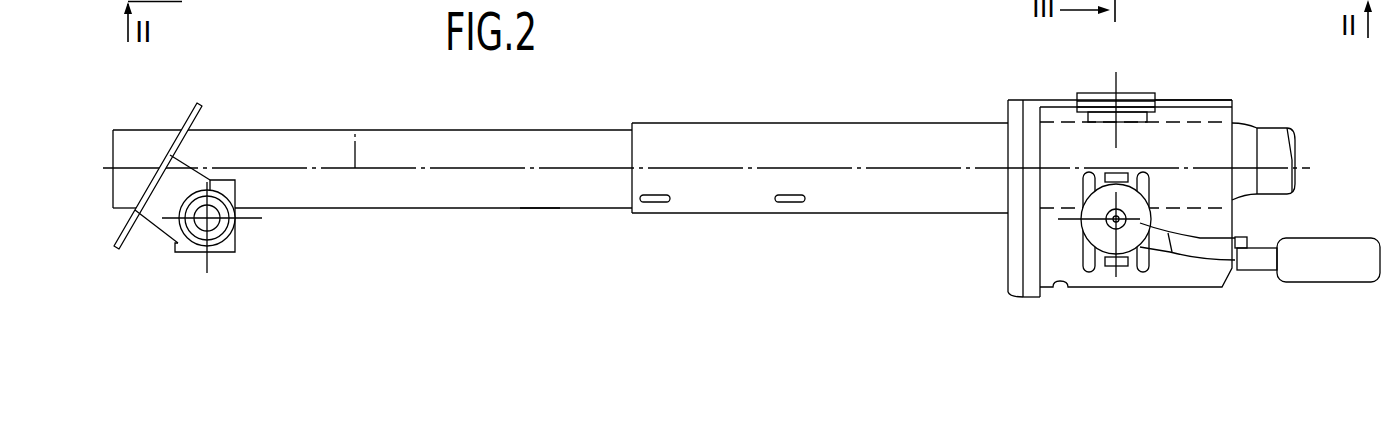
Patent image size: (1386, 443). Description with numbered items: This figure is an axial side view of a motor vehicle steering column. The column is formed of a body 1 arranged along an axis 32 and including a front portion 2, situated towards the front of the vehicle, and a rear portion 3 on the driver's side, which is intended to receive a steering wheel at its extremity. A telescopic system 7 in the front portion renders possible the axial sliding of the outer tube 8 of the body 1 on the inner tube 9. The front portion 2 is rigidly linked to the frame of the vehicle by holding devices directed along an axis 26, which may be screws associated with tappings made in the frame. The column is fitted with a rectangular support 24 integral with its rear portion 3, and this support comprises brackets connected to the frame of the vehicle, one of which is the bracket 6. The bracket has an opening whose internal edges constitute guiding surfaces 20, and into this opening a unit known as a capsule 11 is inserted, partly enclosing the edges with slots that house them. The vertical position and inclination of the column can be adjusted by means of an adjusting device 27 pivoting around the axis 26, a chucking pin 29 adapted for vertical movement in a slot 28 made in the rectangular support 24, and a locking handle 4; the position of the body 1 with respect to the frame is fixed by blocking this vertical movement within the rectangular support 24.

The body 1 is at (810, 132).
The front portion 2 is at (444, 118).
The rear portion 3 is at (1250, 116).
The locking handle 4 is at (1348, 248).
The bracket 6 is at (1058, 100).
The telescopic system 7 is at (632, 123).
The outer tube 8 is at (738, 213).
The inner tube 9 is at (558, 208).
The capsule 11 is at (1140, 95).
The guiding surfaces 20 is at (1193, 100).
The rectangular support 24 is at (1175, 275).
The axis 26 is at (212, 227).
The adjusting device 27 is at (158, 210).
The slot 28 is at (1123, 263).
The chucking pin 29 is at (1095, 265).
The axis 32 is at (355, 130).